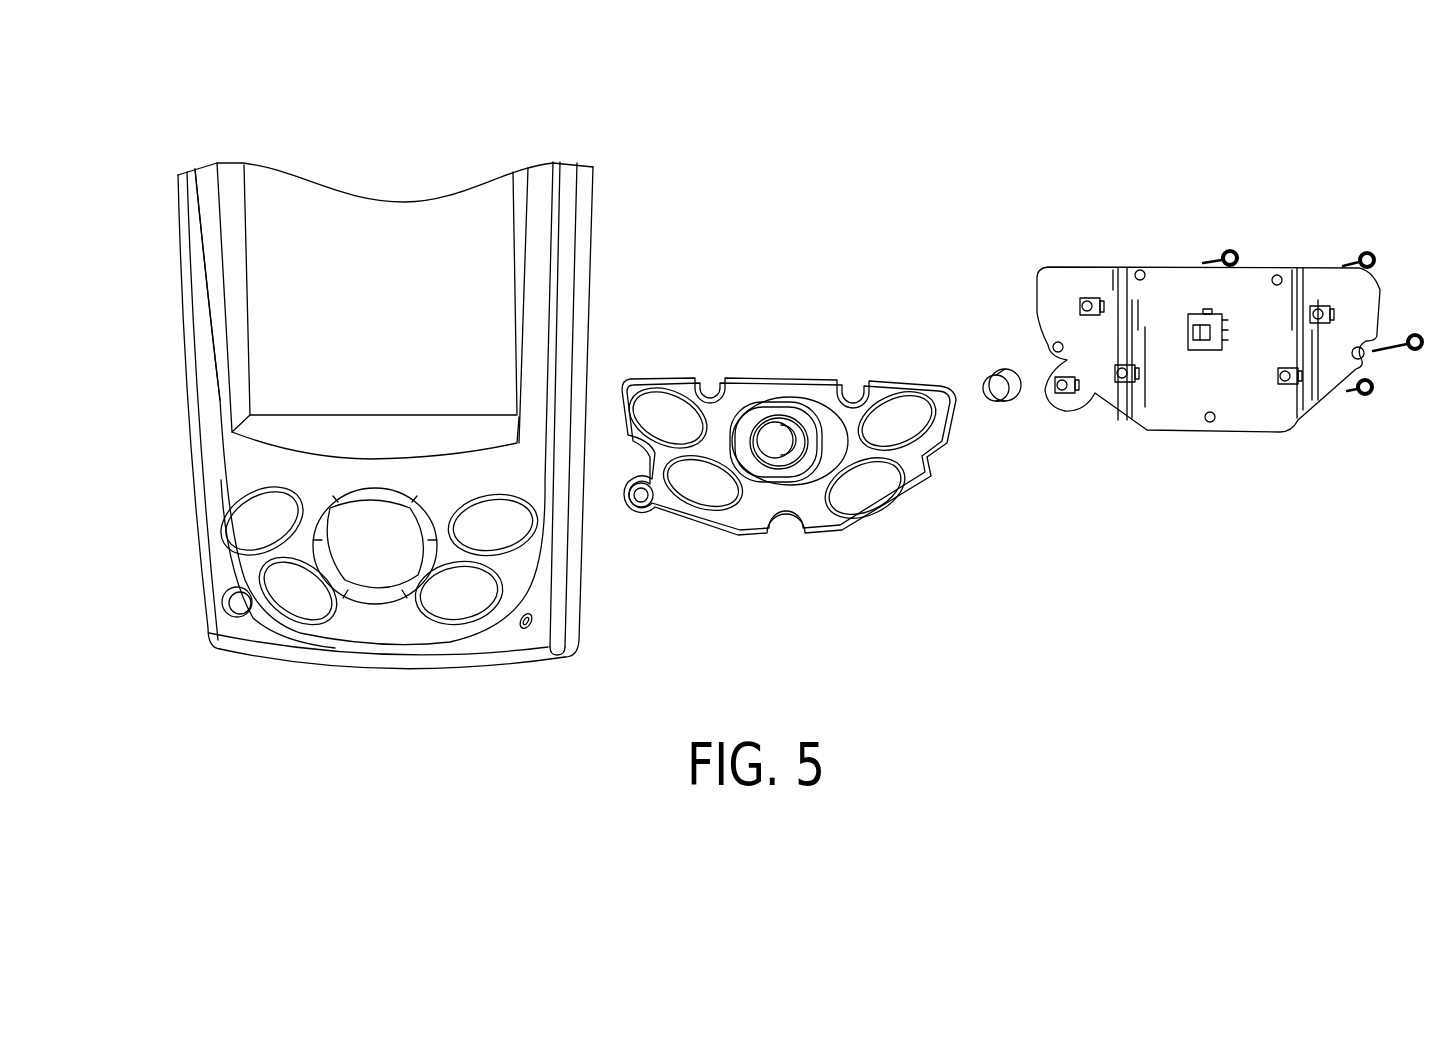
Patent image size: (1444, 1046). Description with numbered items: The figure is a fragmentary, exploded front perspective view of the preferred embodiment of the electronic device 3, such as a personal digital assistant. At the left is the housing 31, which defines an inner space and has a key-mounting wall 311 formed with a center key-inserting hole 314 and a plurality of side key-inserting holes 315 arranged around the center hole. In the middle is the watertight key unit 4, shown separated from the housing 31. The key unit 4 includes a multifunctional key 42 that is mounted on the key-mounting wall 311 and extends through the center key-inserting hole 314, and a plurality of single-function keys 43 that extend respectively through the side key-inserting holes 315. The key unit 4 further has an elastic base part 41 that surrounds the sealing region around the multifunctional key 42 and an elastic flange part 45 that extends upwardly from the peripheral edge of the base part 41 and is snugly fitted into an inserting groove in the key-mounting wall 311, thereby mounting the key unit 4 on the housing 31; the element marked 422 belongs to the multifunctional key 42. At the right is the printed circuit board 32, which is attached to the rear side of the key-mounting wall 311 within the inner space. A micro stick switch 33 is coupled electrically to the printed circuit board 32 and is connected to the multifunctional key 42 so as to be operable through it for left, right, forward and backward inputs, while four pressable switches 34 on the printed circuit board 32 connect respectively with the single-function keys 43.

The electronic device 3 is at (190, 229).
The housing 31 is at (186, 290).
The key-mounting wall 311 is at (213, 403).
The center key-inserting hole 314 is at (353, 517).
The side key-inserting holes 315 is at (278, 580).
The watertight key unit 4 is at (790, 423).
The elastic base part 41 is at (880, 395).
The multifunctional key 42 is at (773, 443).
The central key recess 422 is at (808, 470).
The single-function keys 43 is at (703, 487).
The elastic flange part 45 is at (800, 402).
The printed circuit board 32 is at (1303, 268).
The micro stick switch 33 is at (1191, 352).
The pressable switches 34 is at (1097, 297).